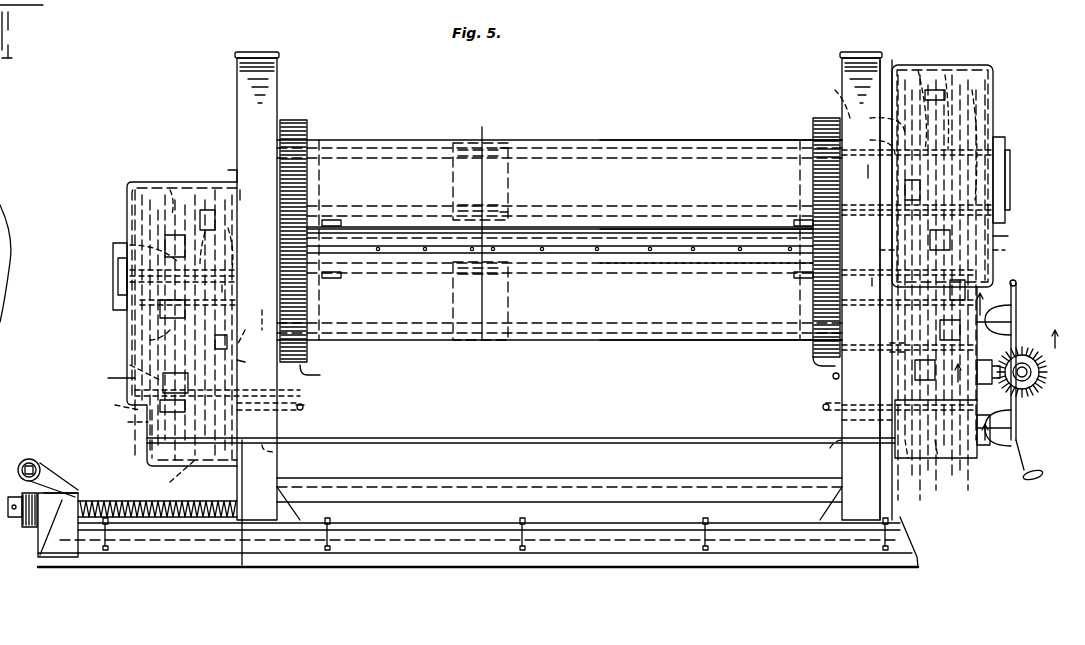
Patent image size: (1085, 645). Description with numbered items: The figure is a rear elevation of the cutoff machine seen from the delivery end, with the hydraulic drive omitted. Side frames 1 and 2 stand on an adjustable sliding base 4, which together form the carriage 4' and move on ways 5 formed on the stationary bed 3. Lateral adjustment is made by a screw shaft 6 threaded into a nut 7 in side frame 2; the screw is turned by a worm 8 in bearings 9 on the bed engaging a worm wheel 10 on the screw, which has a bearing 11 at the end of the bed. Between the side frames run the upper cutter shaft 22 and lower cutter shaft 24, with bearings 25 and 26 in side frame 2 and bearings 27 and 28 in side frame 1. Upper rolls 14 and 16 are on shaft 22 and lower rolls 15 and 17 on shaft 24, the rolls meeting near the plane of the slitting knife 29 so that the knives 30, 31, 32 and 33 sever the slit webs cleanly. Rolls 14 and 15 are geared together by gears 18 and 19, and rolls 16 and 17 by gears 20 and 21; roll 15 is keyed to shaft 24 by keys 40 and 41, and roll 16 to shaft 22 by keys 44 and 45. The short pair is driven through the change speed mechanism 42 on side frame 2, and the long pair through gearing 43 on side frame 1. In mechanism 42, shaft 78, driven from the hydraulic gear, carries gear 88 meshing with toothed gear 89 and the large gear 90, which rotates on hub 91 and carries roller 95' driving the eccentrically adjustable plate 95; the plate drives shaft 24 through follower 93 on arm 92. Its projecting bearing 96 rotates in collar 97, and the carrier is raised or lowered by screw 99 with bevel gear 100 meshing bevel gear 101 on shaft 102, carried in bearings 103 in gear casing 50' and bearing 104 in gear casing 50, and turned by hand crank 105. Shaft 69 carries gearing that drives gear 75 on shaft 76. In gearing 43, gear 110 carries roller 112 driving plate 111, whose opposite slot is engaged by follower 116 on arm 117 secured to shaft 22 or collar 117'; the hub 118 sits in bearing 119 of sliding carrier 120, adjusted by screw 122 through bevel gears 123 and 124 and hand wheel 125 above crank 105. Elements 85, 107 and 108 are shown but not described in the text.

The side frame 1 is at (842, 62).
The side frame 2 is at (255, 52).
The stationary bed 3 is at (856, 567).
The sliding base 4 is at (559, 470).
The carriage 4' is at (559, 443).
The ways 5 is at (204, 567).
The screw shaft 6 is at (115, 501).
The nut 7 is at (242, 490).
The worm 8 is at (45, 470).
The bearings 9 is at (29, 459).
The worm wheel 10 is at (30, 527).
The bearing 11 is at (70, 492).
The cutter roll 14 is at (378, 140).
The cutter roll 15 is at (405, 340).
The cutter roll 16 is at (648, 140).
The cutter roll 17 is at (665, 340).
The gear 18 is at (300, 120).
The gear 19 is at (320, 374).
The gear 20 is at (820, 118).
The gear 21 is at (813, 362).
The upper cutter shaft 22 is at (458, 143).
The lower cutter shaft 24 is at (396, 322).
The bearing 25 is at (228, 172).
The bearing 26 is at (259, 309).
The bearing 27 is at (868, 168).
The bearing 28 is at (872, 282).
The plane of the slitting knife 29 is at (482, 127).
The knife 30 is at (385, 246).
The knife 31 is at (390, 255).
The knife 32 is at (645, 250).
The knife 33 is at (640, 262).
The key 40 is at (334, 278).
The key 41 is at (455, 280).
The change speed mechanism 42 is at (127, 200).
The gearing 43 is at (965, 104).
The key 44 is at (508, 212).
The key 45 is at (800, 272).
The gear casing 50 is at (965, 367).
The gear casing 50' is at (106, 377).
The shaft 69 is at (833, 377).
The gear 75 is at (934, 460).
The shaft 76 is at (822, 408).
The shaft 78 is at (305, 407).
The lever 85 is at (906, 460).
The gear 88 is at (115, 403).
The toothed gear 89 is at (131, 366).
The large gear 90 is at (170, 190).
The hub 91 is at (113, 292).
The arm 92 is at (170, 330).
The follower 93 is at (252, 341).
The eccentrically adjustable plate 95 is at (205, 226).
The roller 95' is at (129, 239).
The projecting bearing 96 is at (223, 296).
The collar 97 is at (222, 239).
The screw 99 is at (253, 365).
The bevel gear 100 is at (240, 225).
The bevel gear 101 is at (166, 475).
The shaft 102 is at (262, 448).
The bearings 103 is at (122, 421).
The bearing 104 is at (980, 460).
The hand crank 105 is at (1028, 482).
The rod 107 is at (890, 420).
The hand wheel 108 is at (1036, 398).
The gear 110 is at (976, 90).
The plate 111 is at (922, 70).
The roller 112 is at (950, 78).
The follower 116 is at (1008, 238).
The arm 117 is at (1019, 186).
The collar 117' is at (1028, 180).
The hub 118 is at (872, 140).
The bearing 119 is at (877, 121).
The sliding carrier 120 is at (828, 98).
The screw 122 is at (890, 252).
The bevel gear 123 is at (892, 343).
The bevel gear 124 is at (892, 352).
The hand wheel 125 is at (1016, 286).